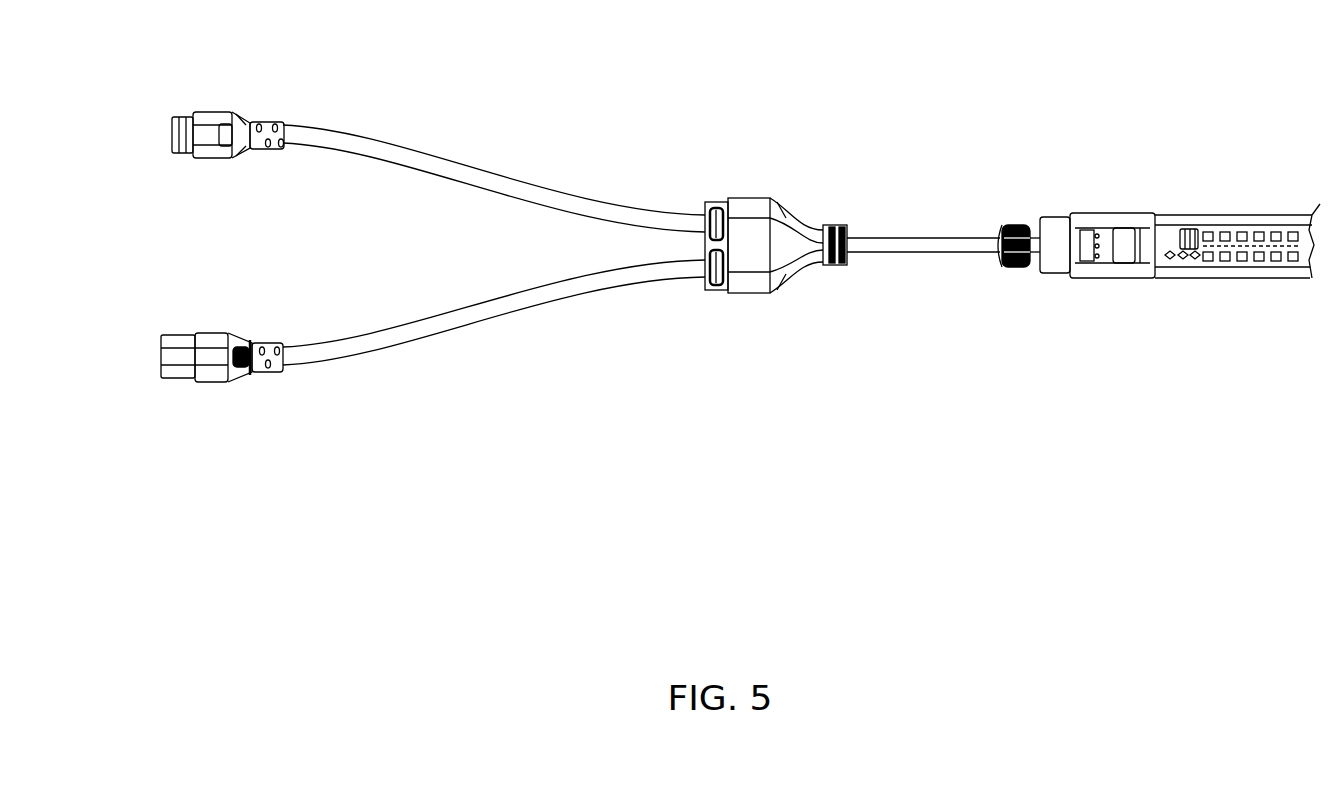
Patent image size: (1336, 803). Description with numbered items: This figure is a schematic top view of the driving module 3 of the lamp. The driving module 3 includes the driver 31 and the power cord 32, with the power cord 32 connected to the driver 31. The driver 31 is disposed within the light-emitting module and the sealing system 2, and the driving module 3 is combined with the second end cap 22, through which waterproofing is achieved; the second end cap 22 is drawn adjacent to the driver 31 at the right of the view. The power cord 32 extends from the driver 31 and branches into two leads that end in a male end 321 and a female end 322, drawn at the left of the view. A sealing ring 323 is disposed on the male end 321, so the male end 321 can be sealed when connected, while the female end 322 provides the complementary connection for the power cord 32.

The sealing system 2 is at (1088, 212).
The second end cap 22 is at (1060, 268).
The driving module 3 is at (641, 173).
The driver 31 is at (1151, 243).
The power cord 32 is at (550, 282).
The male end 321 is at (170, 133).
The female end 322 is at (168, 357).
The sealing ring 323 is at (183, 116).